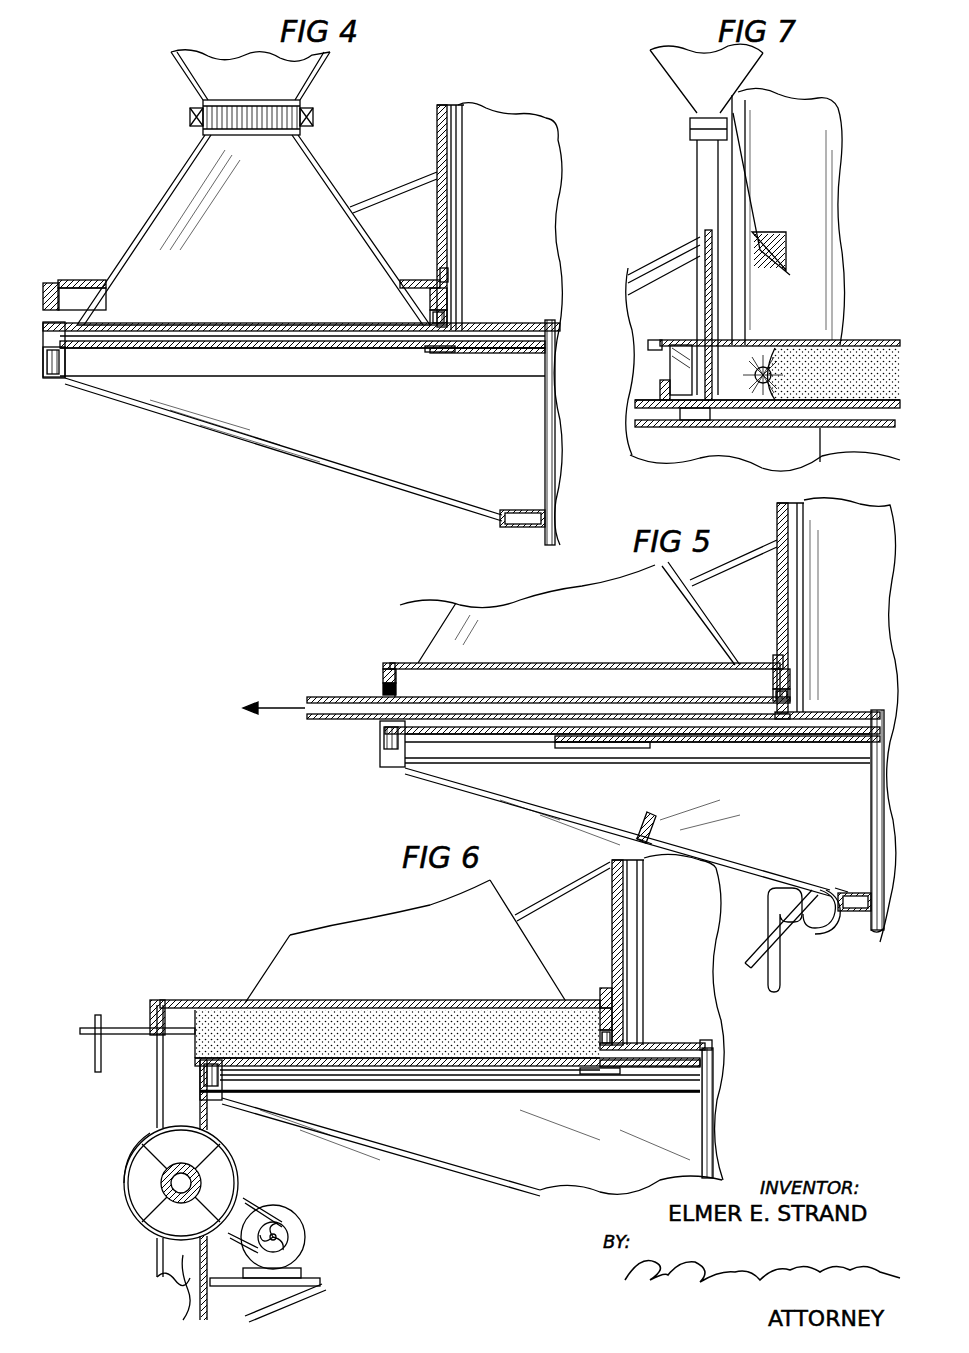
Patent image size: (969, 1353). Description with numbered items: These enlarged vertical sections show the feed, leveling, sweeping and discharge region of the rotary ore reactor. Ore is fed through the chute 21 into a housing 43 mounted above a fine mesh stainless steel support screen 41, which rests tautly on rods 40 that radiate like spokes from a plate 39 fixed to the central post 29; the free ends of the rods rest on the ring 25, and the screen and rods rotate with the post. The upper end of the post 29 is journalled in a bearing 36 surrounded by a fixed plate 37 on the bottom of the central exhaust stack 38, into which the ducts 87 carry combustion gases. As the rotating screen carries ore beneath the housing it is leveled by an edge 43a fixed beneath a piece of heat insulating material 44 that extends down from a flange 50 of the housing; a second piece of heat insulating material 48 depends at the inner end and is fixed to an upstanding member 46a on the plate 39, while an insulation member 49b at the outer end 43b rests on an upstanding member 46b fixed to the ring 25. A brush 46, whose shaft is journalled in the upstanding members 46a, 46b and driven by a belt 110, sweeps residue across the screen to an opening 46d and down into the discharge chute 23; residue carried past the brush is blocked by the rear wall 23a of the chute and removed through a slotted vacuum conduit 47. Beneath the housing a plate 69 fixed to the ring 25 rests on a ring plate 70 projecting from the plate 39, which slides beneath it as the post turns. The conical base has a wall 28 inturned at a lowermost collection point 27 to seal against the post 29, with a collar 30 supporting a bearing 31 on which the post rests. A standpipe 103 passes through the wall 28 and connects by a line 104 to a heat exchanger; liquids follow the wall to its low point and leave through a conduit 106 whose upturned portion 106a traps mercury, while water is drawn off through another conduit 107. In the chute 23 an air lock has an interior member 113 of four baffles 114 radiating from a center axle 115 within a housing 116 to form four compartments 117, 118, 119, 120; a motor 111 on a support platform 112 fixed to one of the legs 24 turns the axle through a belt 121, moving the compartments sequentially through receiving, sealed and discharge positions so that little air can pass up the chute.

In FIG. 4, the chute 21 is at (253, 187).
In FIG. 7, the chute 21 is at (708, 175).
In FIG. 5, the chute 21 is at (570, 613).
In FIG. 6, the chute 21 is at (405, 941).
In FIG. 6, the discharge chute 23 is at (157, 1085).
In FIG. 7, the rear wall 23a is at (720, 340).
In FIG. 6, the legs 24 is at (185, 1305).
In FIG. 4, the ring 25 is at (60, 378).
In FIG. 5, the ring 25 is at (380, 744).
In FIG. 6, the ring 25 is at (315, 1080).
In FIG. 5, the central lowermost collection point 27 is at (848, 890).
In FIG. 4, the wall 28 is at (395, 470).
In FIG. 5, the wall 28 is at (598, 815).
In FIG. 6, the wall 28 is at (480, 1166).
In FIG. 4, the central post 29 is at (548, 425).
In FIG. 7, the central post 29 is at (840, 460).
In FIG. 5, the central post 29 is at (872, 840).
In FIG. 6, the central post 29 is at (702, 1140).
In FIG. 4, the collar 30 is at (538, 527).
In FIG. 5, the collar 30 is at (846, 912).
In FIG. 5, the bearing 31 is at (878, 932).
In FIG. 6, the bearing 36 is at (712, 1046).
In FIG. 5, the fixed plate 37 is at (852, 712).
In FIG. 6, the fixed plate 37 is at (692, 1043).
In FIG. 4, the central exhaust stack 38 is at (499, 324).
In FIG. 7, the central exhaust stack 38 is at (808, 172).
In FIG. 5, the central exhaust stack 38 is at (777, 530).
In FIG. 6, the central exhaust stack 38 is at (668, 1017).
In FIG. 4, the plate 39 is at (486, 353).
In FIG. 5, the plate 39 is at (824, 742).
In FIG. 6, the plate 39 is at (652, 1067).
In FIG. 4, the rods 40 is at (200, 346).
In FIG. 7, the rods 40 is at (672, 410).
In FIG. 5, the rods 40 is at (582, 742).
In FIG. 6, the rods 40 is at (422, 1068).
In FIG. 4, the support screen 41 is at (242, 347).
In FIG. 7, the support screen 41 is at (635, 400).
In FIG. 5, the support screen 41 is at (620, 743).
In FIG. 6, the support screen 41 is at (480, 1068).
In FIG. 4, the housing 43 is at (90, 280).
In FIG. 7, the housing 43 is at (810, 340).
In FIG. 5, the housing 43 is at (515, 665).
In FIG. 6, the housing 43 is at (419, 993).
In FIG. 4, the edge 43a is at (448, 278).
In FIG. 7, the edge 43a is at (660, 388).
In FIG. 5, the edge 43a is at (783, 664).
In FIG. 6, the edge 43a is at (612, 1000).
In FIG. 4, the outer end 43b is at (48, 283).
In FIG. 5, the outer end 43b is at (385, 663).
In FIG. 7, the heat insulating material 44 is at (670, 360).
In FIG. 7, the brush 46 is at (834, 374).
In FIG. 6, the brush 46 is at (397, 1034).
In FIG. 4, the upstanding member 46a is at (448, 316).
In FIG. 5, the upstanding member 46a is at (790, 696).
In FIG. 6, the upstanding member 46a is at (612, 1036).
In FIG. 4, the upstanding member 46b is at (50, 340).
In FIG. 5, the upstanding member 46b is at (383, 689).
In FIG. 6, the opening 46d is at (165, 1030).
In FIG. 7, the slotted conduit 47 is at (746, 372).
In FIG. 5, the slotted conduit 47 is at (572, 700).
In FIG. 4, the heat insulating material 48 is at (448, 294).
In FIG. 5, the heat insulating material 48 is at (790, 680).
In FIG. 6, the heat insulating material 48 is at (612, 1015).
In FIG. 4, the end member 49b is at (82, 299).
In FIG. 5, the end member 49b is at (383, 674).
In FIG. 7, the flange 50 is at (648, 336).
In FIG. 4, the plate 69 is at (289, 346).
In FIG. 7, the plate 69 is at (752, 420).
In FIG. 5, the plate 69 is at (525, 736).
In FIG. 6, the plate 69 is at (356, 1068).
In FIG. 4, the ring plate 70 is at (440, 352).
In FIG. 7, the ring plate 70 is at (792, 428).
In FIG. 5, the ring plate 70 is at (760, 748).
In FIG. 6, the ring plate 70 is at (602, 1074).
In FIG. 4, the ducts 87 is at (393, 185).
In FIG. 7, the ducts 87 is at (668, 252).
In FIG. 5, the ducts 87 is at (722, 578).
In FIG. 6, the ducts 87 is at (563, 895).
In FIG. 5, the standpipe 103 is at (656, 826).
In FIG. 5, the line 104 is at (646, 845).
In FIG. 5, the conduit 106 is at (812, 930).
In FIG. 5, the upturned portion 106a is at (780, 892).
In FIG. 5, the conduit 107 is at (770, 958).
In FIG. 6, the belt 110 is at (95, 1050).
In FIG. 6, the motor 111 is at (306, 1220).
In FIG. 6, the support platform 112 is at (316, 1278).
In FIG. 6, the interior member 113 is at (130, 1168).
In FIG. 6, the baffles 114 is at (150, 1150).
In FIG. 6, the center axle 115 is at (188, 1178).
In FIG. 6, the housing 116 is at (140, 1115).
In FIG. 6, the compartment 117 is at (180, 1158).
In FIG. 6, the compartment 118 is at (147, 1185).
In FIG. 6, the compartment 119 is at (189, 1213).
In FIG. 6, the compartment 120 is at (220, 1185).
In FIG. 6, the belt 121 is at (268, 1195).